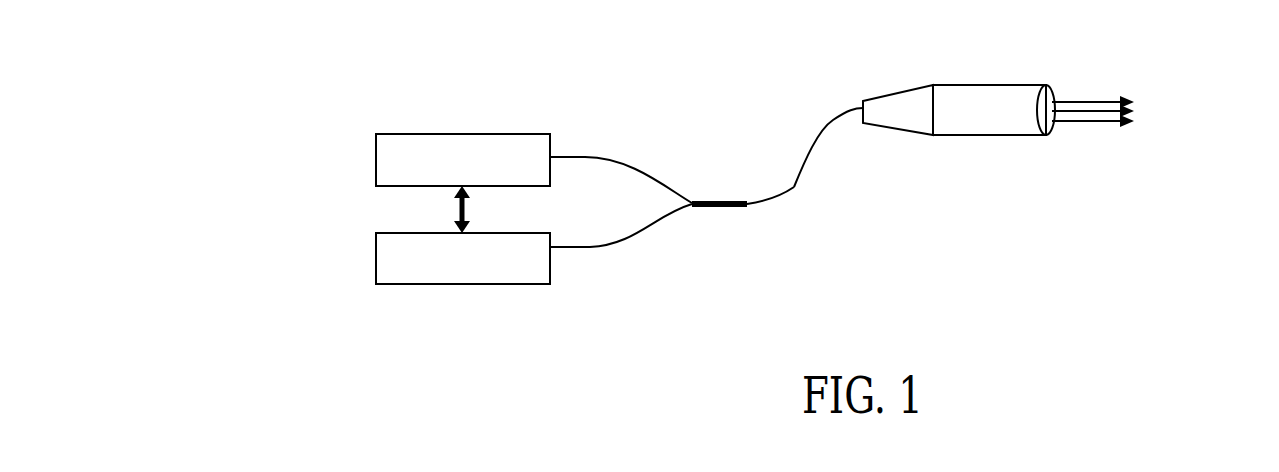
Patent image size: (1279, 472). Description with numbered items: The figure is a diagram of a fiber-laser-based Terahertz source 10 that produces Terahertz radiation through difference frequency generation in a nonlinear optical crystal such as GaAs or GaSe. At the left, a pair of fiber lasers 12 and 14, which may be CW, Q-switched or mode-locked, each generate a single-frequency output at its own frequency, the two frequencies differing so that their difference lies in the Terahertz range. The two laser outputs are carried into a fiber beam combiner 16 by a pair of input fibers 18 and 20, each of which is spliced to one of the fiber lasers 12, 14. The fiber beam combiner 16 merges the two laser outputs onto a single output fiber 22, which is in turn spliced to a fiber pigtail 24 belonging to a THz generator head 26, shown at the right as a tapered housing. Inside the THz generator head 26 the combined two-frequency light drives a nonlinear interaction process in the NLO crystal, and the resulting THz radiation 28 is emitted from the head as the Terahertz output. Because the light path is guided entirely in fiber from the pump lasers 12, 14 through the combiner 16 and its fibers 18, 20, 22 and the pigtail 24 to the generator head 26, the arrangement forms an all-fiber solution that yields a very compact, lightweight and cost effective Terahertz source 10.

The Terahertz source 10 is at (562, 97).
The fiber laser 12 is at (413, 133).
The fiber laser 14 is at (448, 284).
The fiber beam combiner 16 is at (712, 224).
The input fiber 18 is at (638, 183).
The input fiber 20 is at (671, 215).
The output fiber 22 is at (794, 187).
The fiber pigtail 24 is at (833, 120).
The THz generator head 26 is at (994, 88).
The THz radiation 28 is at (1088, 123).